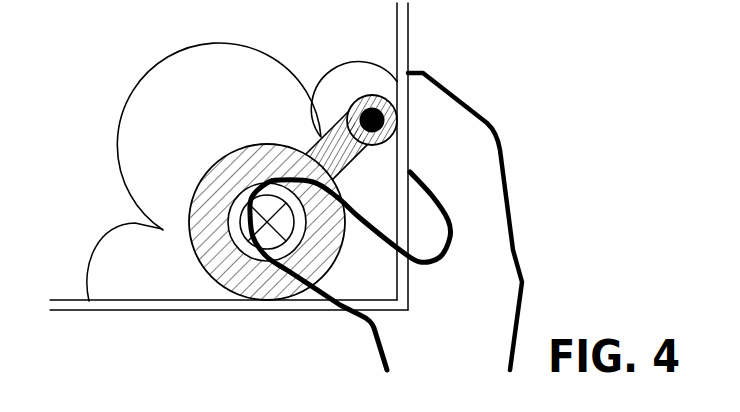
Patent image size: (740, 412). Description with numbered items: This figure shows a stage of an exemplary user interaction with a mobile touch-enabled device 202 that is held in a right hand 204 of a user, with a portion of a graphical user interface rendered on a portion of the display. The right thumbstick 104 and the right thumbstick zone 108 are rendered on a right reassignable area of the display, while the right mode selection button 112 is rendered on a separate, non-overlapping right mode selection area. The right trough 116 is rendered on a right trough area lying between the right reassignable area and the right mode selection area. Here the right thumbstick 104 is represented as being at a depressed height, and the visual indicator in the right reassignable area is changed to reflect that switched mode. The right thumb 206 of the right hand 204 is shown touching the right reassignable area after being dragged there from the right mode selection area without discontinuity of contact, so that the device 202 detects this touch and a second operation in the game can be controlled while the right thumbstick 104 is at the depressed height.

The right thumbstick 104 is at (235, 195).
The right thumbstick zone 108 is at (187, 230).
The right mode selection button 112 is at (355, 102).
The right trough 116 is at (323, 137).
The mobile touch-enabled device 202 is at (408, 40).
The right hand 204 is at (510, 203).
The right thumb 206 is at (290, 267).